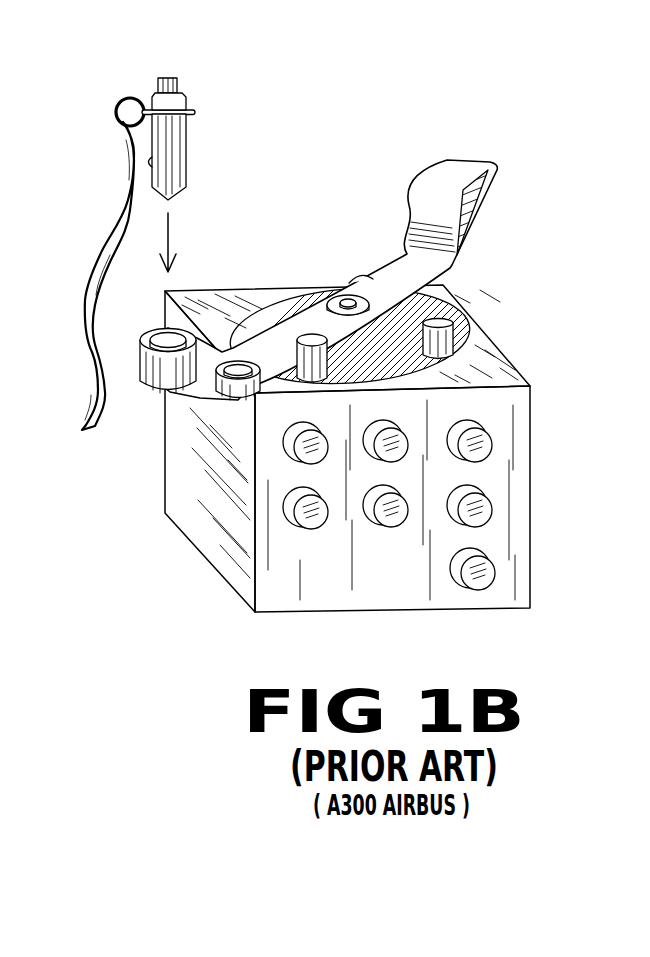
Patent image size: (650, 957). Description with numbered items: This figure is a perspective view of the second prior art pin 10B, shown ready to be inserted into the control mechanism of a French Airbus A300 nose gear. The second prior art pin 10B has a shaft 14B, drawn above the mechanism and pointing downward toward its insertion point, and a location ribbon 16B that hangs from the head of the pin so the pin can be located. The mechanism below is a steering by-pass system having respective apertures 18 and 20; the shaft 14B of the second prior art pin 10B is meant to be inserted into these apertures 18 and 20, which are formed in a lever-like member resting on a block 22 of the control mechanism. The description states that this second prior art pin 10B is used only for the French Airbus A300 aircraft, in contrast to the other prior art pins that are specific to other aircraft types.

The second prior art pin 10B is at (238, 128).
The shaft 14B is at (190, 168).
The location ribbon 16B is at (95, 283).
The aperture 18 is at (160, 388).
The aperture 20 is at (157, 330).
The circuit breaker housing block 22 is at (218, 537).